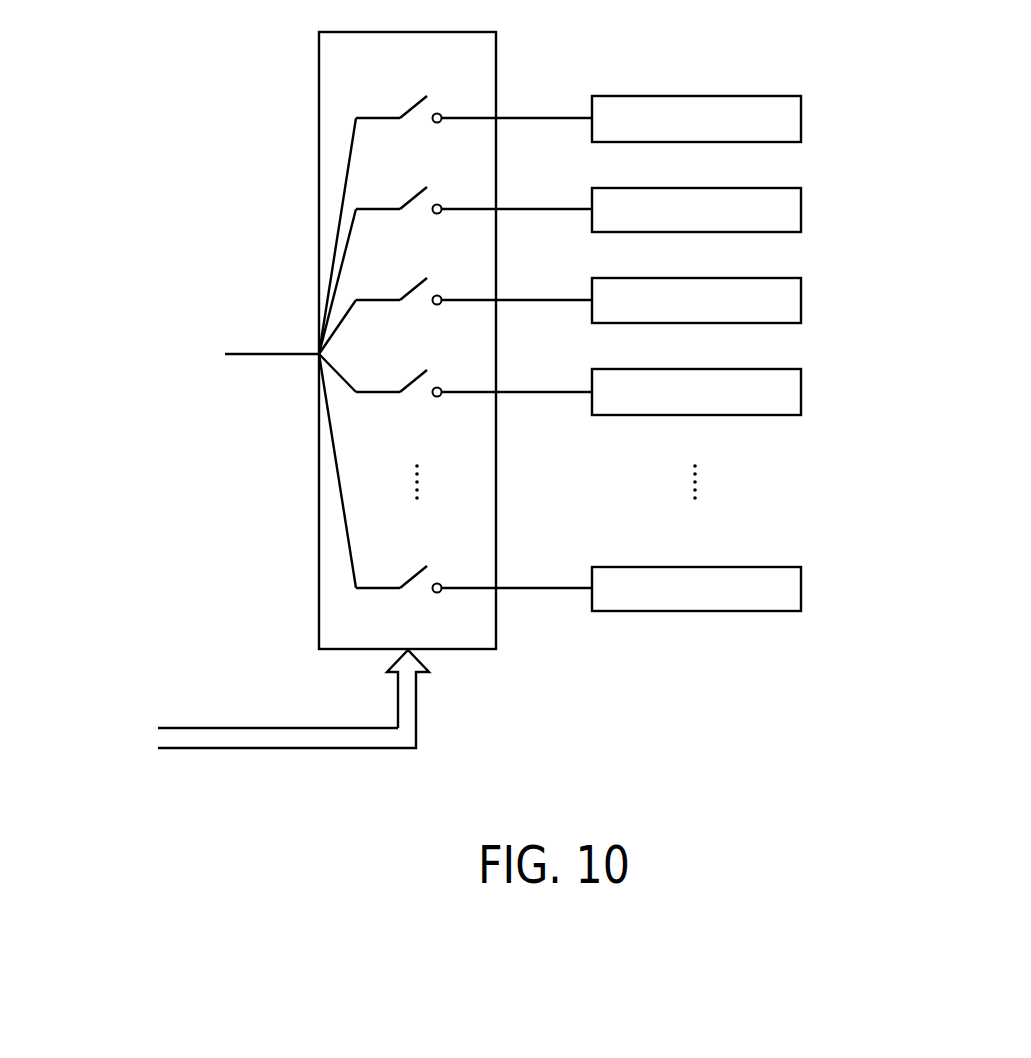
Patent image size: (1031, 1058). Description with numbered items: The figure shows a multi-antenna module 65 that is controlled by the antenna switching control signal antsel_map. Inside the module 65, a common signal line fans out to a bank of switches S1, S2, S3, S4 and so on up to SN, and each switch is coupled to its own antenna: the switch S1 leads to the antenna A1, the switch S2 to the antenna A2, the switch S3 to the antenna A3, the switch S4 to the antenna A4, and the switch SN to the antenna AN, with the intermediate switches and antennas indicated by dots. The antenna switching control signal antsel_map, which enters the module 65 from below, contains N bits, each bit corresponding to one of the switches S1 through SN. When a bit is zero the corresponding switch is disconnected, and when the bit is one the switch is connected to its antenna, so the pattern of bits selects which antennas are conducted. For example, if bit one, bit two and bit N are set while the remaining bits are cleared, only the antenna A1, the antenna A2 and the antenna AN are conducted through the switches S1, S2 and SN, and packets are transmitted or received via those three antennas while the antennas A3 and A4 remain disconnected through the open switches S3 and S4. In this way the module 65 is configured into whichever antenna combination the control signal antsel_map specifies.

The antenna selection switch module 65 is at (586, 390).
The switch S1 is at (474, 127).
The switch S2 is at (474, 218).
The switch S3 is at (474, 309).
The switch S4 is at (474, 401).
The switch SN is at (474, 597).
The antenna A1 is at (696, 119).
The antenna A2 is at (696, 210).
The antenna A3 is at (696, 300).
The antenna A4 is at (696, 392).
The antenna AN is at (696, 589).